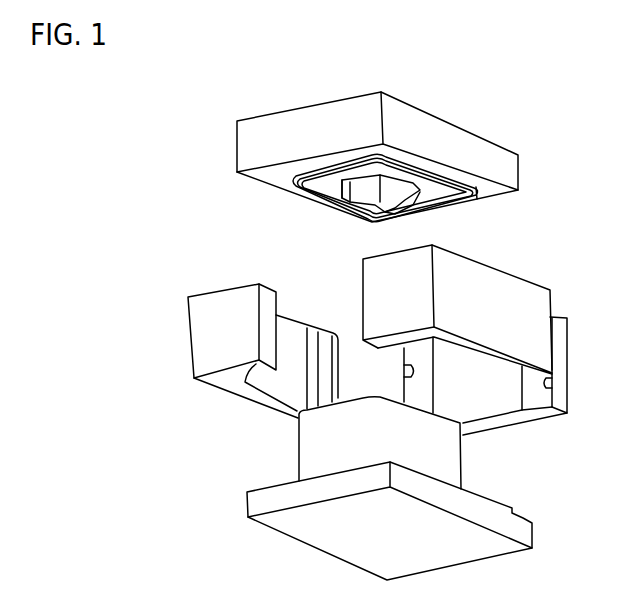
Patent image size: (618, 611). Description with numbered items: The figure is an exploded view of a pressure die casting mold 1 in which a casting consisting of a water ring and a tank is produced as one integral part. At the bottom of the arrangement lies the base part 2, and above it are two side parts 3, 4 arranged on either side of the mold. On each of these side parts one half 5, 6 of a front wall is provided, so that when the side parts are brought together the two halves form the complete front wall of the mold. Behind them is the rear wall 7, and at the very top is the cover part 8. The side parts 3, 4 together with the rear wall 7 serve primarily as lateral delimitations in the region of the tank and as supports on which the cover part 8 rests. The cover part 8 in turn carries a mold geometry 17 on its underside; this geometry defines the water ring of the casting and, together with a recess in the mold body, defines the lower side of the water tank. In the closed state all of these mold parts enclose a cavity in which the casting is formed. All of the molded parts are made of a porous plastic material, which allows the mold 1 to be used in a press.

The pressure die casting mold 1 is at (178, 197).
The base part 2 is at (298, 530).
The side part 3 is at (490, 278).
The side part 4 is at (235, 382).
The half of a front wall 5 is at (402, 263).
The half of a front wall 6 is at (207, 302).
The rear wall 7 is at (517, 428).
The cover part 8 is at (452, 142).
The mold geometry 17 is at (312, 212).